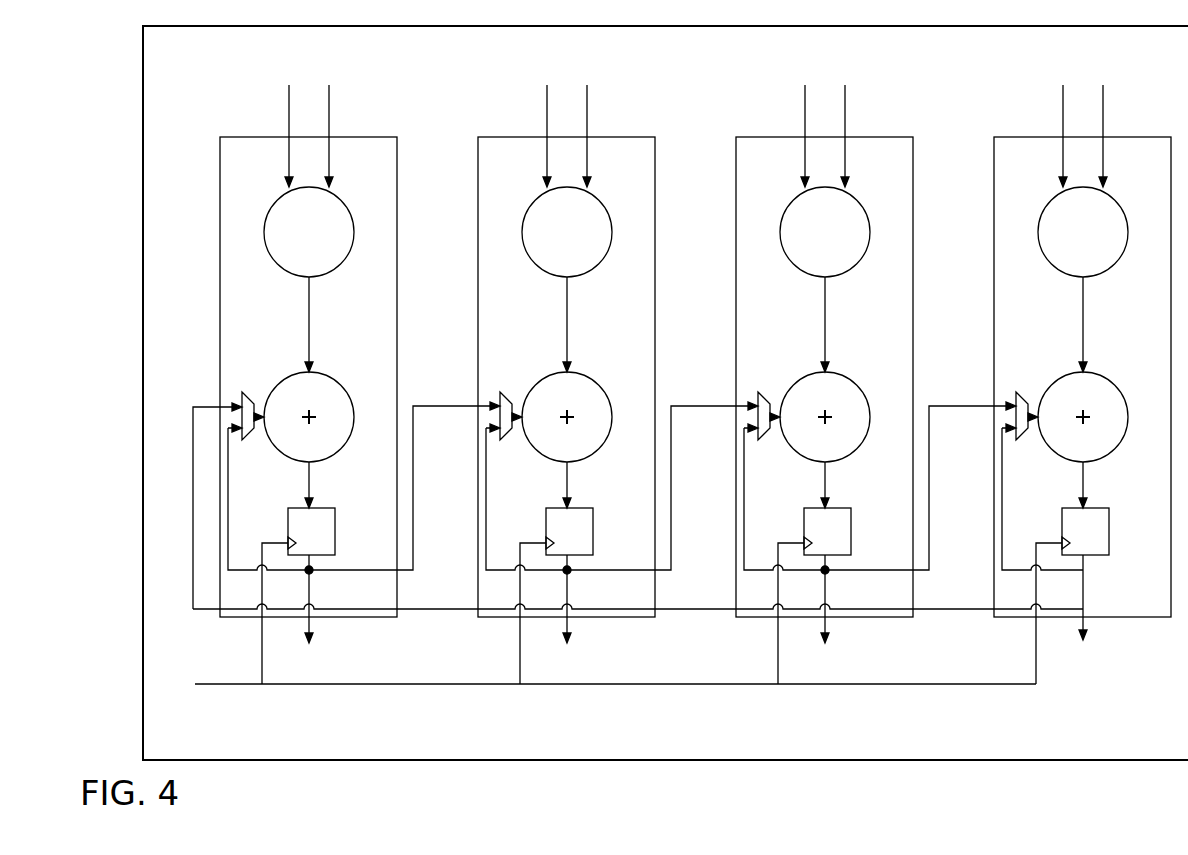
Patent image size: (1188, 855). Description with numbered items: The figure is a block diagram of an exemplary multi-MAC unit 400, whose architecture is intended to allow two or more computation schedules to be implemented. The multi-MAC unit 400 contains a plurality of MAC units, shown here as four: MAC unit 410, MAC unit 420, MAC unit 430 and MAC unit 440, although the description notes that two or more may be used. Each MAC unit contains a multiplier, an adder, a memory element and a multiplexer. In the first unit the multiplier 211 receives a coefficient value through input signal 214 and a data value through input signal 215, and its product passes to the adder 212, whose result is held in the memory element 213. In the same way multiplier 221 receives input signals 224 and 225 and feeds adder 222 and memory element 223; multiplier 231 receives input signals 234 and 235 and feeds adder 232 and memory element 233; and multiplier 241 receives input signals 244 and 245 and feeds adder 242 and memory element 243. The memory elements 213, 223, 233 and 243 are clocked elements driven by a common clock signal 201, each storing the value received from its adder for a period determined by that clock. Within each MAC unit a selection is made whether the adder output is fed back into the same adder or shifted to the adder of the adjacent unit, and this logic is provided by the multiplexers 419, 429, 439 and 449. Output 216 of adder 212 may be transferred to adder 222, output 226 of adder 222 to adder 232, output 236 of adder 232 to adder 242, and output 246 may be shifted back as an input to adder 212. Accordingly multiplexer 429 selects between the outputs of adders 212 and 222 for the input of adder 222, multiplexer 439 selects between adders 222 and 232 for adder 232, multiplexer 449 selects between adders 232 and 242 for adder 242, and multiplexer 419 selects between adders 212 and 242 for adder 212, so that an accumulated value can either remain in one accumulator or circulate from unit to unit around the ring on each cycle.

The multi-MAC unit 400 is at (490, 762).
The clock signal 201 is at (413, 684).
The MAC unit 410 is at (220, 177).
The MAC unit 420 is at (478, 177).
The MAC unit 430 is at (736, 177).
The MAC unit 440 is at (994, 177).
The multiplier 211 is at (330, 275).
The multiplier 221 is at (588, 275).
The multiplier 231 is at (846, 275).
The multiplier 241 is at (1104, 275).
The adder 212 is at (370, 377).
The adder 222 is at (628, 377).
The adder 232 is at (886, 377).
The adder 242 is at (1144, 377).
The memory element 213 is at (336, 520).
The memory element 223 is at (594, 520).
The memory element 233 is at (852, 520).
The memory element 243 is at (1110, 520).
The input signal 214 is at (278, 123).
The input signal 215 is at (343, 123).
The input signal 224 is at (536, 123).
The input signal 225 is at (601, 123).
The input signal 234 is at (794, 123).
The input signal 235 is at (859, 123).
The input signal 244 is at (1052, 123).
The input signal 245 is at (1117, 123).
The multiplexer 419 is at (247, 393).
The multiplexer 429 is at (505, 393).
The multiplexer 439 is at (763, 393).
The multiplexer 449 is at (1021, 393).
The output 216 is at (413, 572).
The output 226 is at (671, 572).
The output 236 is at (929, 572).
The output 246 is at (1084, 584).